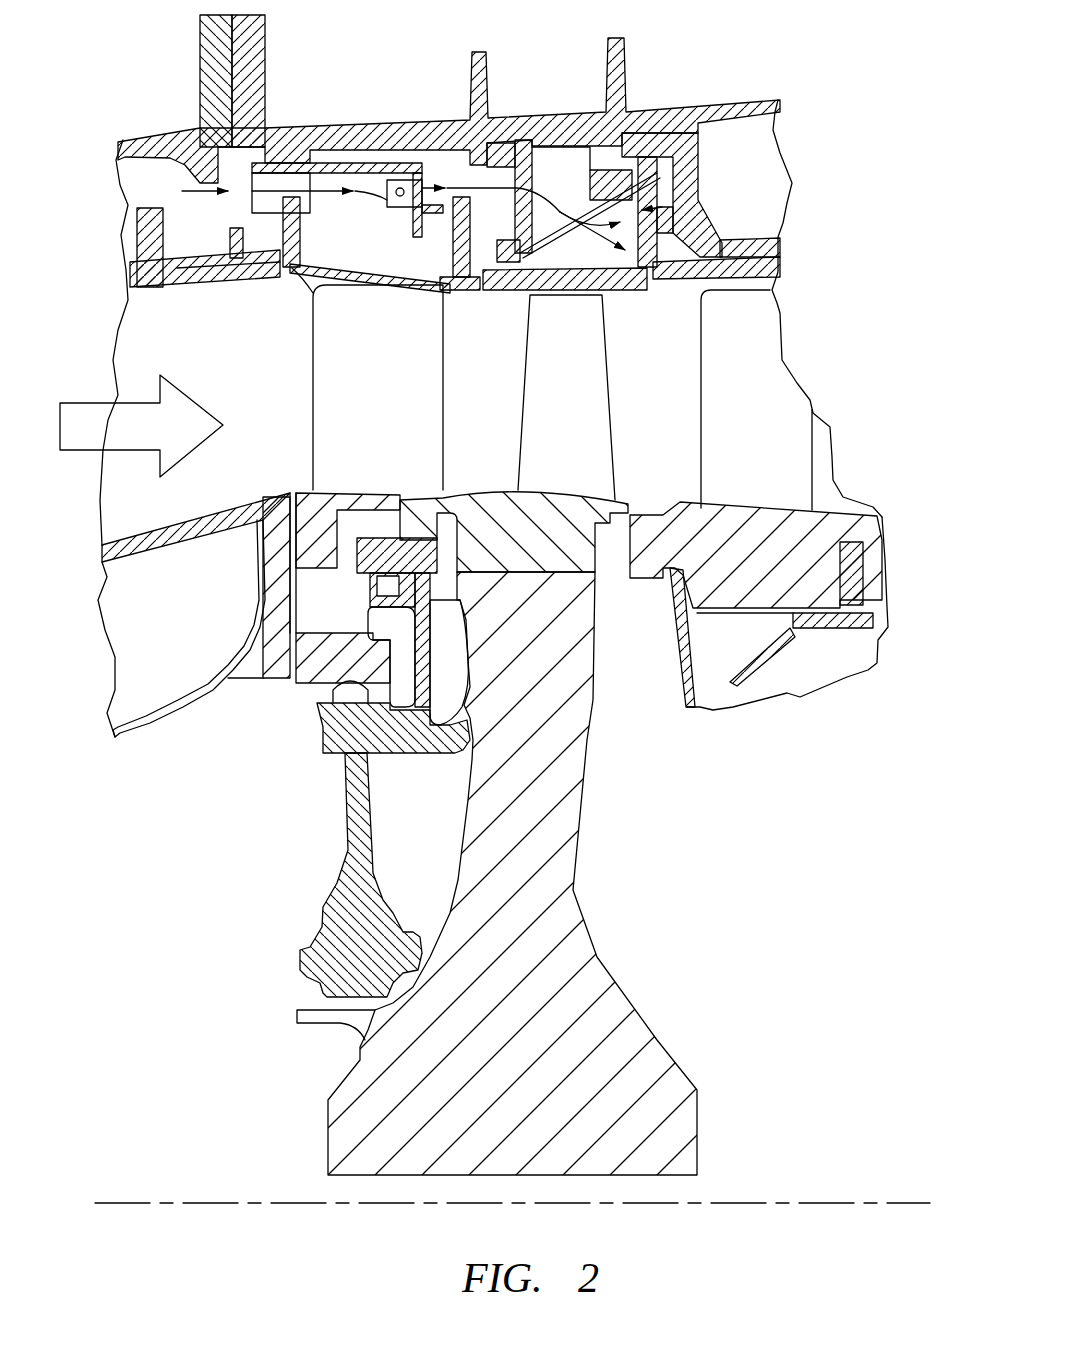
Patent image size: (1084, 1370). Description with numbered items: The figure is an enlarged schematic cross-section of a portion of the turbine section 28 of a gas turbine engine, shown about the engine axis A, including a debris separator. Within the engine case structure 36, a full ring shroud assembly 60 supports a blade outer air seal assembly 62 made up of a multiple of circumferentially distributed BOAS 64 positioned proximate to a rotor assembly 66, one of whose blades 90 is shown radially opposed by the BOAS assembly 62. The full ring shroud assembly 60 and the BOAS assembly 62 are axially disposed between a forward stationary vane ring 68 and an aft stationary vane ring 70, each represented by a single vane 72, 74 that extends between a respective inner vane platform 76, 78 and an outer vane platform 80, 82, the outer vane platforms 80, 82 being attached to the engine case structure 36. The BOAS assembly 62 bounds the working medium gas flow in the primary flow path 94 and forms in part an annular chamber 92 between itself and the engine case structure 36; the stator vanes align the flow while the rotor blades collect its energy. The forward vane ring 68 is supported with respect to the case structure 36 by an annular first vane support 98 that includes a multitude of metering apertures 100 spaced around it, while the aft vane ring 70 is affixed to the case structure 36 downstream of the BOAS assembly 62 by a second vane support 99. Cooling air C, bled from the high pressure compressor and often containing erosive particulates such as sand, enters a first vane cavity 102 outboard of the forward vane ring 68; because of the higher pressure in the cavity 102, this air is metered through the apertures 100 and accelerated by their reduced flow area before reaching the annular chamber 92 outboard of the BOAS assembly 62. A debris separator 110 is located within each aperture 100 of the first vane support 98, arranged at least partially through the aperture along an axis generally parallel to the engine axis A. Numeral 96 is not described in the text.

The turbine section 28 is at (843, 283).
The engine case structure 36 is at (746, 99).
The full ring shroud assembly 60 is at (567, 194).
The blade outer air seal (BOAS) assembly 62 is at (620, 322).
The BOAS 64 is at (602, 291).
The rotor assembly 66 is at (611, 851).
The forward stationary vane ring 68 is at (283, 430).
The aft stationary vane ring 70 is at (858, 408).
The vane 72 is at (345, 413).
The vane 74 is at (721, 343).
The inner vane platform 76 is at (298, 496).
The inner vane platform 78 is at (751, 512).
The outer vane platform 80 is at (292, 272).
The outer vane platform 82 is at (780, 291).
The blade 90 is at (540, 456).
The annular chamber 92 is at (545, 165).
The primary flow path 94 is at (95, 441).
The vane support 96 is at (511, 298).
The first vane support 98 is at (380, 168).
The second vane support 99 is at (703, 156).
The metering aperture 100 is at (437, 160).
The first vane cavity 102 is at (328, 249).
The debris separator 110 is at (400, 187).
The cooling air C is at (200, 187).
The engine axis A is at (915, 1200).